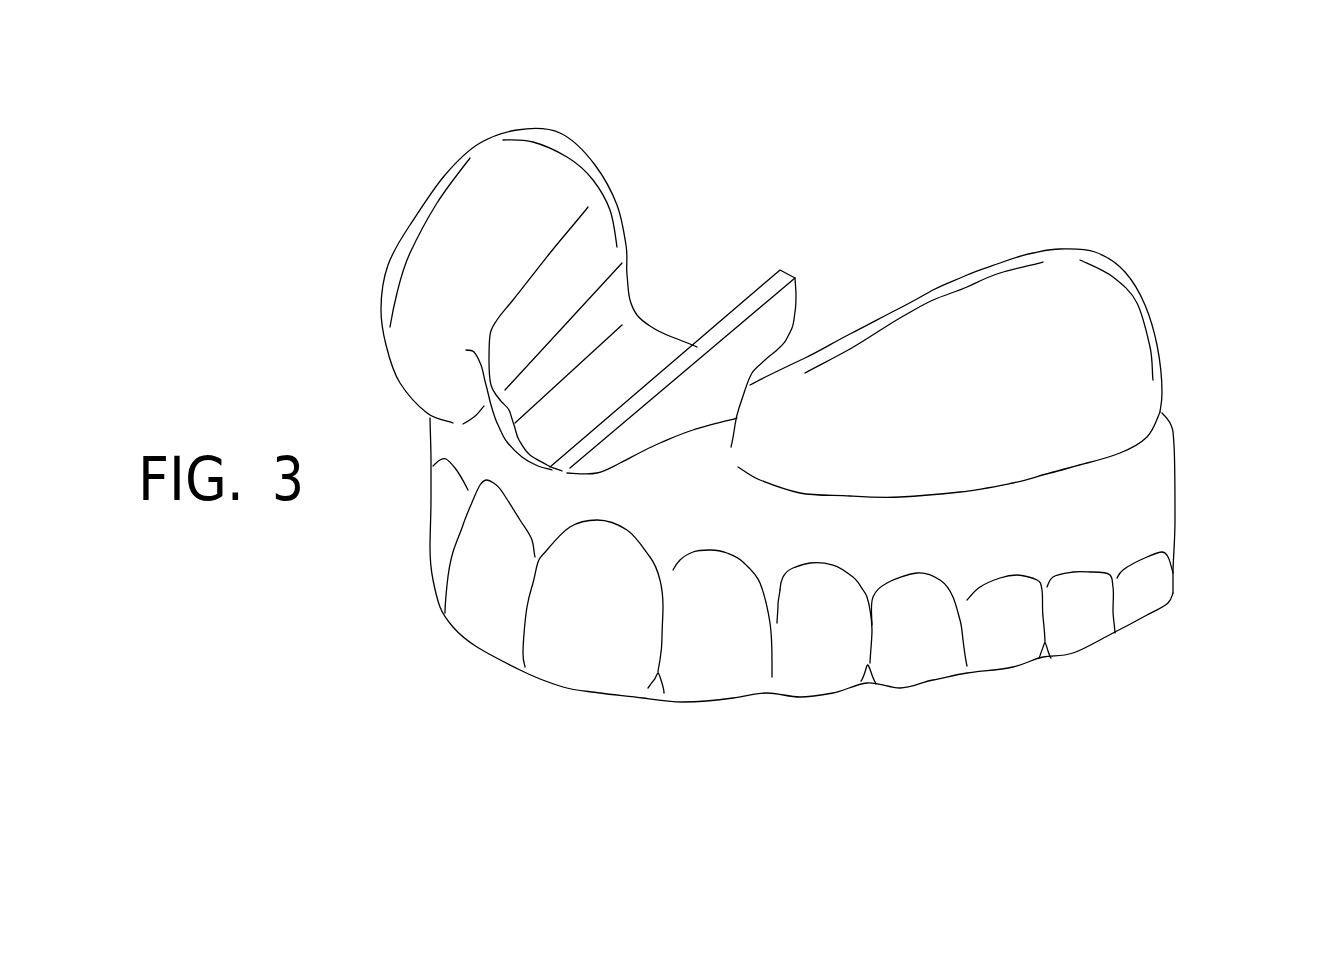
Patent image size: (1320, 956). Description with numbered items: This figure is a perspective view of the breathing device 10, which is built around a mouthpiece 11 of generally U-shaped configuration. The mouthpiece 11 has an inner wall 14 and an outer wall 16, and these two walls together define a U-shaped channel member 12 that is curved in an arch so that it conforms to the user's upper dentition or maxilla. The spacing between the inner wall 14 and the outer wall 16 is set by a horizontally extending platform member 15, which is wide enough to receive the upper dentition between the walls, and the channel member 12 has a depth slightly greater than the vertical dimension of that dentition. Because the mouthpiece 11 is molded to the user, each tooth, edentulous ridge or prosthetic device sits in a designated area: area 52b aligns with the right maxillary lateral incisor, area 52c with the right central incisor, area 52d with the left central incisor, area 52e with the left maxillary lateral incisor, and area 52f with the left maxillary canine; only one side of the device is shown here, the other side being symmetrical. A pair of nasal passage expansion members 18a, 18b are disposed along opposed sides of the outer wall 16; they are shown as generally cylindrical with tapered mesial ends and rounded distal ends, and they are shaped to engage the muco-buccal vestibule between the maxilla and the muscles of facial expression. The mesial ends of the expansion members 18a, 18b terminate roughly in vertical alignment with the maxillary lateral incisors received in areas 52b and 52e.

The breathing device 10 is at (286, 229).
The mouthpiece 11 is at (1175, 483).
The U-shaped channel member 12 is at (627, 373).
The inner wall 14 is at (777, 315).
The platform member 15 is at (677, 357).
The outer wall 16 is at (701, 491).
The nasal passage expansion member 18a is at (457, 167).
The nasal passage expansion member 18b is at (1064, 260).
The area for right maxillary lateral incisor 52b is at (440, 548).
The area for right central incisor 52c is at (487, 617).
The area for left central incisor 52d is at (578, 637).
The area for left maxillary lateral incisor 52e is at (700, 660).
The area for left maxillary canine 52f is at (817, 667).